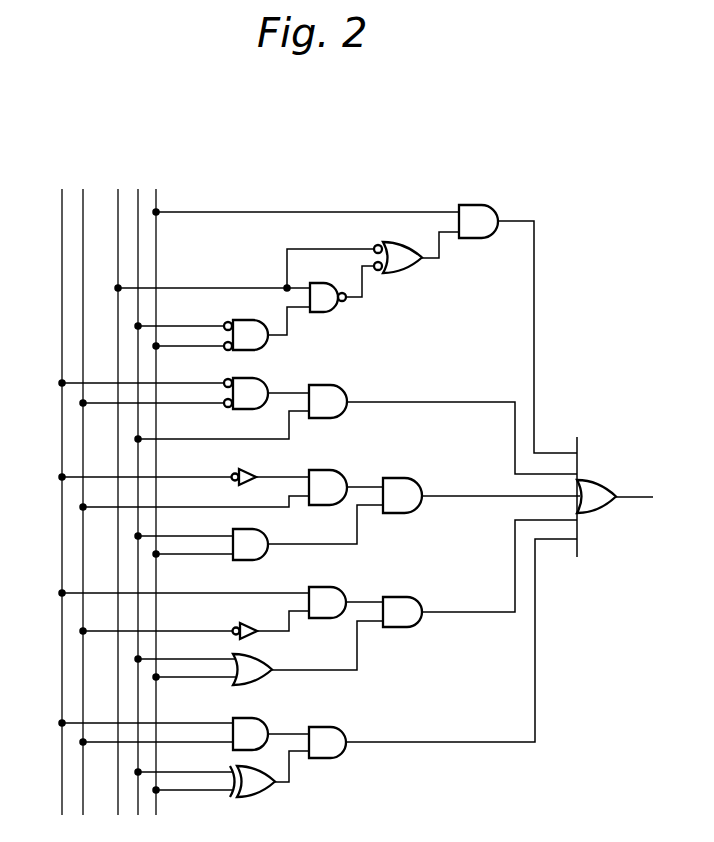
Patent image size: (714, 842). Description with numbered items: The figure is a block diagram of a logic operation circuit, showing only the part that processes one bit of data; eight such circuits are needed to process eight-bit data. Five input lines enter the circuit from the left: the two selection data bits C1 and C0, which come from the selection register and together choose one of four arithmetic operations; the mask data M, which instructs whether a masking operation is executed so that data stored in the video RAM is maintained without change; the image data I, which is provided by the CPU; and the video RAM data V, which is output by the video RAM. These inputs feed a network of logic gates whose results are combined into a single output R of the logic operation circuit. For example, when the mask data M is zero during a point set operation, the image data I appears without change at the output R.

The selection data bit C1 is at (55, 490).
The selection data bit C0 is at (85, 490).
The mask data M is at (115, 490).
The image data I is at (135, 490).
The video RAM data V is at (155, 490).
The output R is at (624, 497).